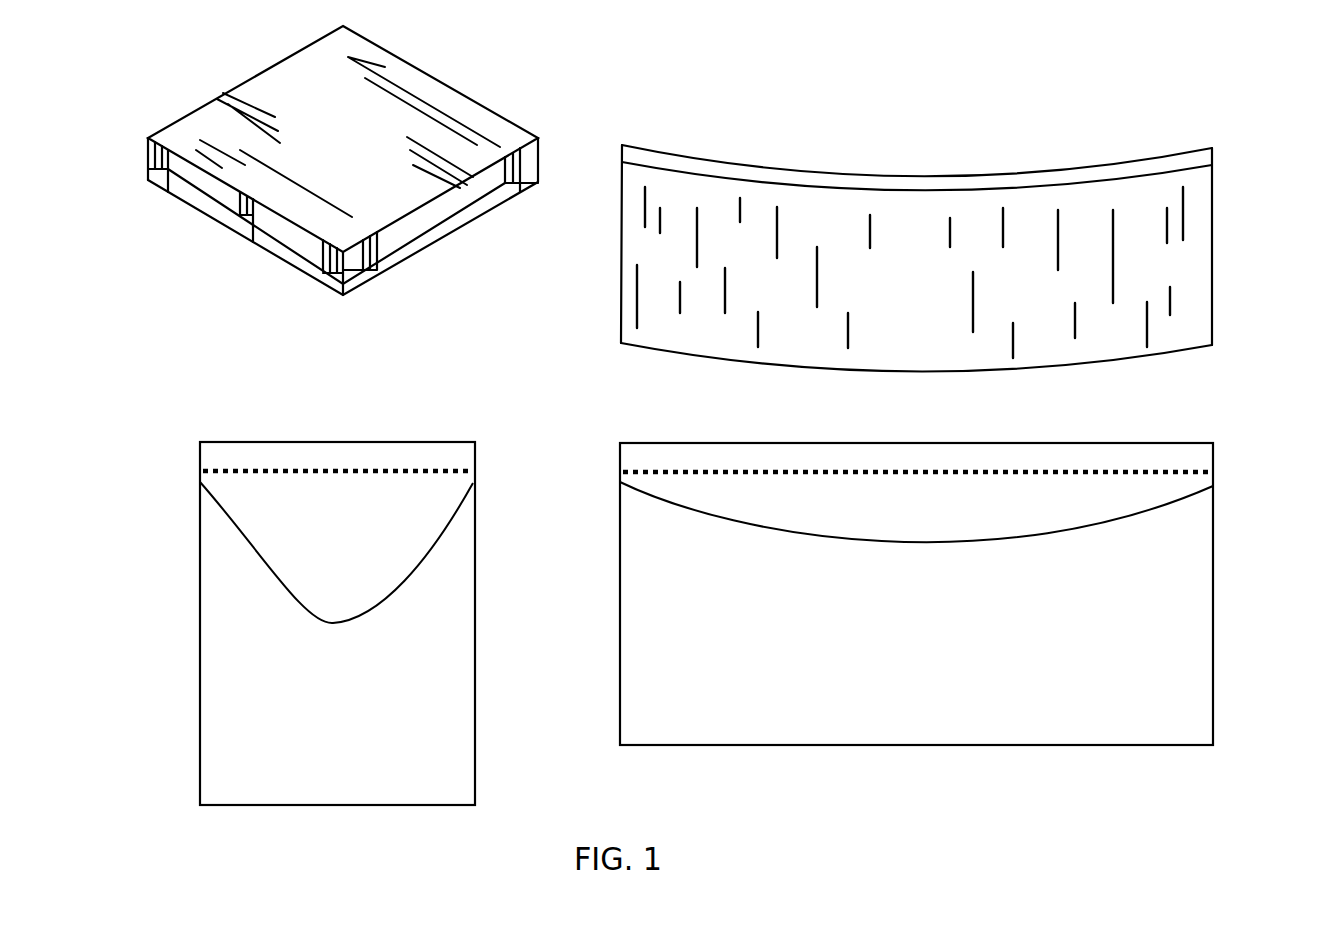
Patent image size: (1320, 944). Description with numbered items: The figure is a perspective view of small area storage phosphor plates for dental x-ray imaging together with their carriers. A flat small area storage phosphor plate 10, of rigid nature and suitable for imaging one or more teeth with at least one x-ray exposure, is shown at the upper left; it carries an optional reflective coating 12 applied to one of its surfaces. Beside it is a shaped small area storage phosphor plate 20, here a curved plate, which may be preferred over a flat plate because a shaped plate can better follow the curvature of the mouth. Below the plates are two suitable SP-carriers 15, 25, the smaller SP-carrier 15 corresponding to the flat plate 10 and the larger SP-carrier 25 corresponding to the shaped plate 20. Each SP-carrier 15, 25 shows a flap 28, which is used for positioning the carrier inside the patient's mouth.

The flat small area storage phosphor plate 10 is at (198, 187).
The reflective coating 12 is at (378, 268).
The shaped small area storage phosphor plate 20 is at (681, 163).
The SP-carrier 15 is at (440, 700).
The SP-carrier 25 is at (635, 651).
The flap 28 is at (417, 525).